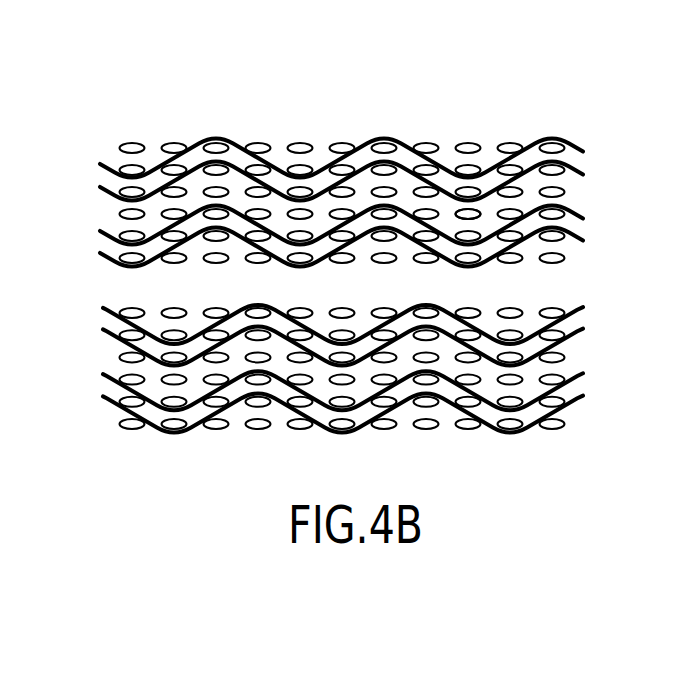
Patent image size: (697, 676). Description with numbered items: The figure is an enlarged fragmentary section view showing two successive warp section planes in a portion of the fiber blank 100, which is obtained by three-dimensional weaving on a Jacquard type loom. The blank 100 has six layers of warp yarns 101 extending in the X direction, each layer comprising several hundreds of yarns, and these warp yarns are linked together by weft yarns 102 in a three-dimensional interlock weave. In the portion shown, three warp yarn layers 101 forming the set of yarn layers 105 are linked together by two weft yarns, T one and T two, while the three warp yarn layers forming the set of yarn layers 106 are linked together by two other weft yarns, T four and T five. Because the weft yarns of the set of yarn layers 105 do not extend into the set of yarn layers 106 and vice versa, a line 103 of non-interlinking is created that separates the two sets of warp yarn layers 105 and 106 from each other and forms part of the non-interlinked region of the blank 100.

The fiber blank 100 is at (347, 117).
The warp yarns 101 is at (138, 143).
The weft yarns 102 is at (100, 167).
The line of non-interlinking 103 is at (447, 208).
The set of yarn layers 105 is at (622, 140).
The set of yarn layers 106 is at (622, 203).